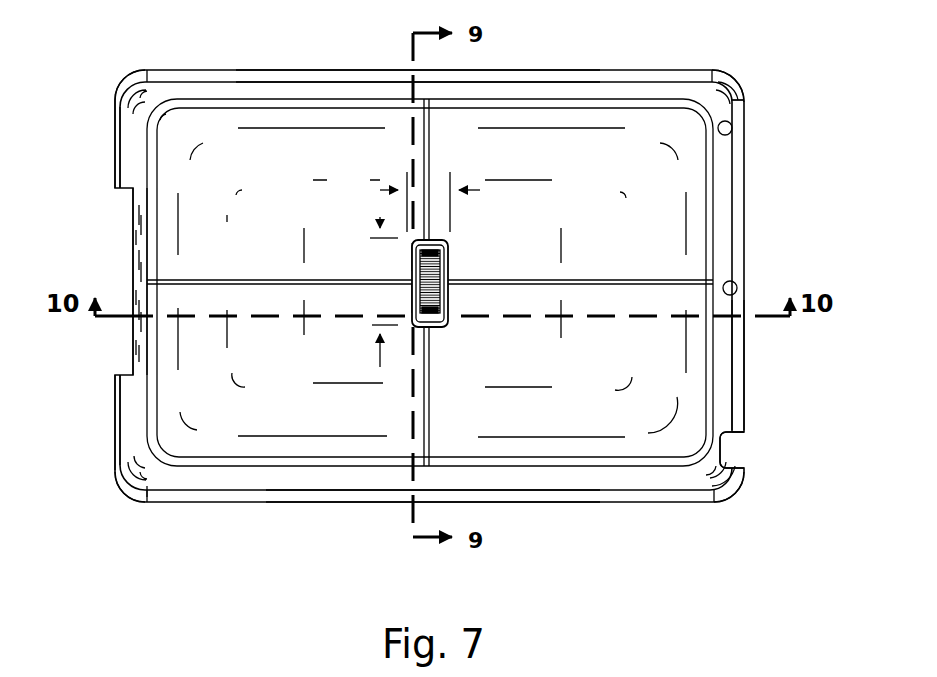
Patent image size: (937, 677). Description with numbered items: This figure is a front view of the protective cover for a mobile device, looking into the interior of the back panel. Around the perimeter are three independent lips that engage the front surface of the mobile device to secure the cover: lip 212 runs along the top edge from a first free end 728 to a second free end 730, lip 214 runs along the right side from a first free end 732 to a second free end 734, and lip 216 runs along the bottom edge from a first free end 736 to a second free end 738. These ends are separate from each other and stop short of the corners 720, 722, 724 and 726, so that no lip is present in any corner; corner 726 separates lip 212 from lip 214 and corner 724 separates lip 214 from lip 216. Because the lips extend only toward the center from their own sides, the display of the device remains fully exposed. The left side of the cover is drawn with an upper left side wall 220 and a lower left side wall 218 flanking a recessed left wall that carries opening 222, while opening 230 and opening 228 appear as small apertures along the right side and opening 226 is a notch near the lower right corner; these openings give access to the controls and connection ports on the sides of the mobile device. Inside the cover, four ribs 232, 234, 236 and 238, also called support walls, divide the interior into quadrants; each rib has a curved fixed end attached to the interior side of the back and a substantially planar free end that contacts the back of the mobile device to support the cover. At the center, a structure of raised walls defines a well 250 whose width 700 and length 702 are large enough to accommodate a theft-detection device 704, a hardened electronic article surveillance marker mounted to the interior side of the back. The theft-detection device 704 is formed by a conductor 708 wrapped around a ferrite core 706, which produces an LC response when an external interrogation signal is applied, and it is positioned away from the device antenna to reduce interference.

The lip 212 is at (236, 70).
The lip 214 is at (738, 334).
The lip 216 is at (266, 492).
The lower left side wall 218 is at (122, 418).
The upper left side wall 220 is at (122, 153).
The opening 222 is at (133, 232).
The opening 226 is at (736, 447).
The opening 228 is at (736, 290).
The opening 230 is at (732, 127).
The rib 232 is at (628, 285).
The rib 234 is at (212, 280).
The rib 236 is at (422, 157).
The rib 238 is at (430, 428).
The well 250 is at (413, 240).
The width 700 is at (478, 190).
The length 702 is at (380, 356).
The theft-detection device 704 is at (449, 302).
The ferrite core 706 is at (448, 248).
The conductor 708 is at (437, 272).
The corner 720 is at (128, 74).
The corner 722 is at (130, 503).
The corner 724 is at (738, 492).
The corner 726 is at (737, 87).
The first free end 728 is at (147, 72).
The second free end 730 is at (713, 72).
The first free end 732 is at (743, 100).
The second free end 734 is at (745, 432).
The first free end 736 is at (705, 500).
The second free end 738 is at (152, 502).